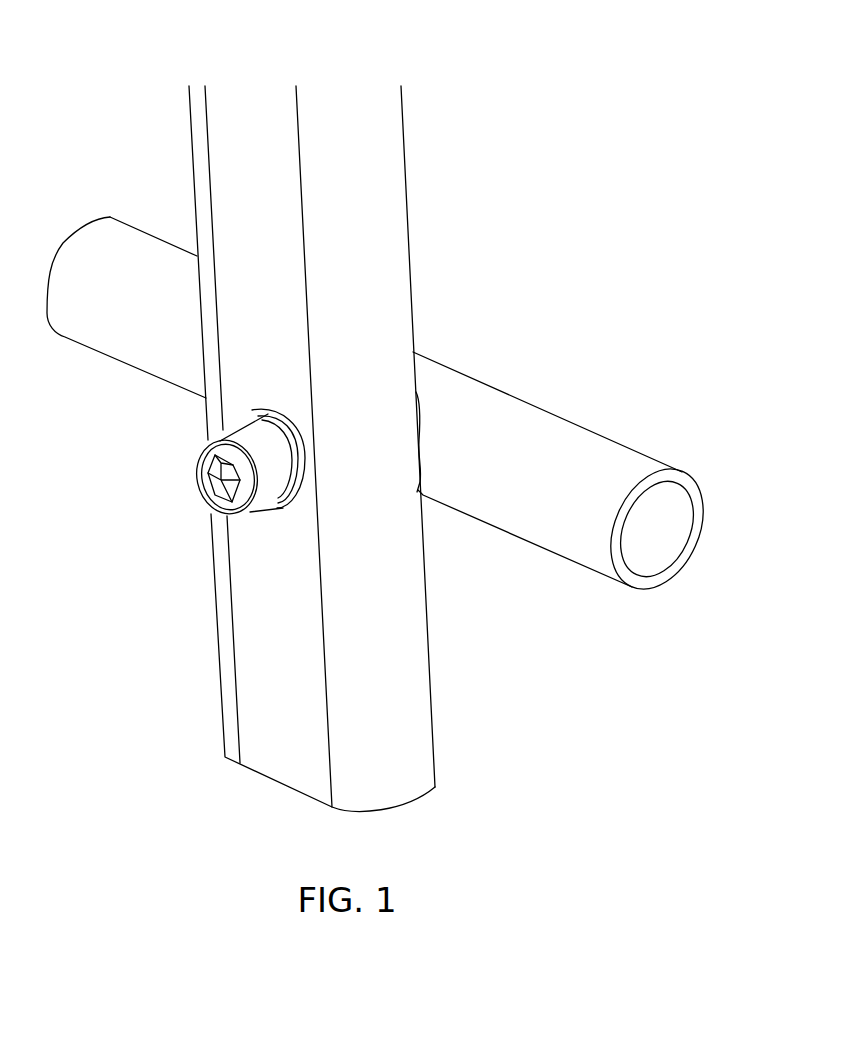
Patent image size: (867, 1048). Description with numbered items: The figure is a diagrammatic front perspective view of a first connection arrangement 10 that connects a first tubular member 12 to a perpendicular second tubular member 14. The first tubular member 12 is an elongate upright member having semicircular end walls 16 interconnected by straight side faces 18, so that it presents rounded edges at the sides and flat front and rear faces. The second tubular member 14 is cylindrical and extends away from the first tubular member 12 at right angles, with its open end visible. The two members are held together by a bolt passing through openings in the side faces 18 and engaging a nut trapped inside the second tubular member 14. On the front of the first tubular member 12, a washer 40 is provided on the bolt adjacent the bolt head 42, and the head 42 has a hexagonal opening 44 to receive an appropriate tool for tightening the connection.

The first connection arrangement 10 is at (118, 487).
The first tubular member 12 is at (378, 198).
The second tubular member 14 is at (533, 495).
The semicircular end walls 16 is at (228, 705).
The straight side faces 18 is at (290, 750).
The washer 40 is at (305, 448).
The head 42 is at (262, 483).
The hexagonal opening 44 is at (222, 480).